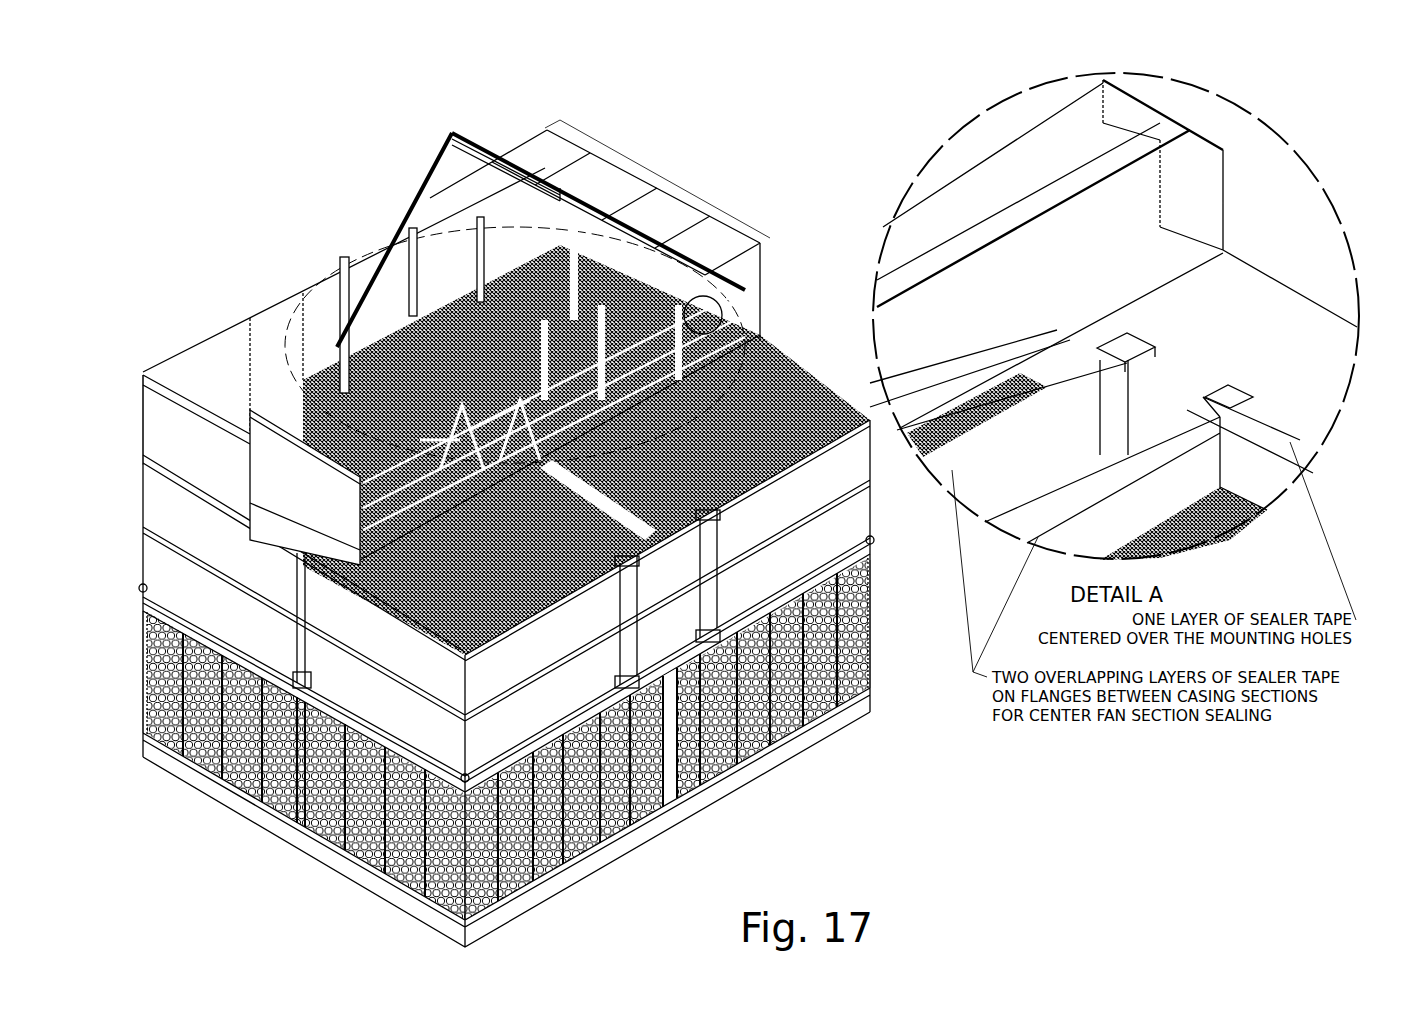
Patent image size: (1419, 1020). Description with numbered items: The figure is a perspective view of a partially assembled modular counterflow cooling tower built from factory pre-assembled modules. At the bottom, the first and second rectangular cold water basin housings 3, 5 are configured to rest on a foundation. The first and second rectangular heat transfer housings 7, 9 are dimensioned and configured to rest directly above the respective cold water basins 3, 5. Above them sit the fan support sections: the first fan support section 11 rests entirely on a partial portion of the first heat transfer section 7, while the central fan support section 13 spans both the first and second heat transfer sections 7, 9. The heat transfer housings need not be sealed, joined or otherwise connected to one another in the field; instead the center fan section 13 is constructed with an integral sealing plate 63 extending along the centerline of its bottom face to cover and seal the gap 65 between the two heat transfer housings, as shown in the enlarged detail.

The first rectangular cold water basin housing 3 is at (143, 684).
The second rectangular cold water basin housing 5 is at (873, 655).
The first rectangular heat transfer housing 7 is at (143, 510).
The second rectangular heat transfer housing 9 is at (870, 522).
The first fan support section 11 is at (141, 428).
The central fan support section 13 is at (708, 203).
The integral sealing plate 63 is at (1163, 226).
The gap 65 is at (1190, 350).